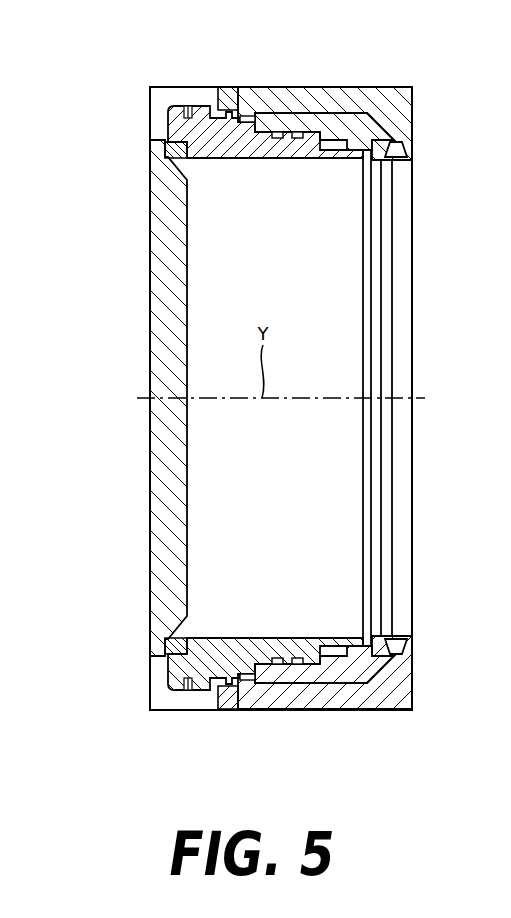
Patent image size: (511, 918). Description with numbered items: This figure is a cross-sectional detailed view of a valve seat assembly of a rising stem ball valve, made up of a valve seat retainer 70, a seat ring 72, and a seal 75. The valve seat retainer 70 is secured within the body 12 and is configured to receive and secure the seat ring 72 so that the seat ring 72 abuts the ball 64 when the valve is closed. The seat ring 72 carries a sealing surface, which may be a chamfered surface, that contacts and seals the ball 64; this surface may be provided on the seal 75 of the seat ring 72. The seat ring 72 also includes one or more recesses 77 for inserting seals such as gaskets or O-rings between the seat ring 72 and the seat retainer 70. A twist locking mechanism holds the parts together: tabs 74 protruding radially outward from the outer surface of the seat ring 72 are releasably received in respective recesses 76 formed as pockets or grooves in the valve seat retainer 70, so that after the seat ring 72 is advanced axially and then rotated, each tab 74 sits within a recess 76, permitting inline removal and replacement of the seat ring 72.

The body 12 is at (403, 120).
The ball 64 is at (160, 243).
The valve seat retainer 70 is at (280, 688).
The seat ring 72 is at (172, 672).
The tabs 74 is at (233, 116).
The seal 75 is at (166, 146).
The recesses 76 is at (244, 118).
The recesses 77 is at (300, 140).